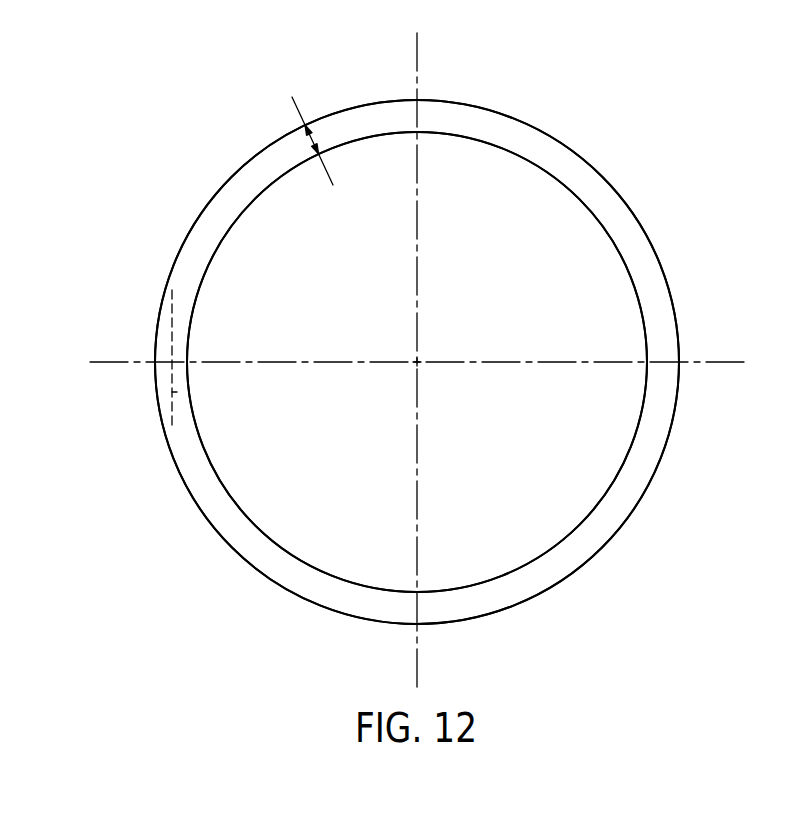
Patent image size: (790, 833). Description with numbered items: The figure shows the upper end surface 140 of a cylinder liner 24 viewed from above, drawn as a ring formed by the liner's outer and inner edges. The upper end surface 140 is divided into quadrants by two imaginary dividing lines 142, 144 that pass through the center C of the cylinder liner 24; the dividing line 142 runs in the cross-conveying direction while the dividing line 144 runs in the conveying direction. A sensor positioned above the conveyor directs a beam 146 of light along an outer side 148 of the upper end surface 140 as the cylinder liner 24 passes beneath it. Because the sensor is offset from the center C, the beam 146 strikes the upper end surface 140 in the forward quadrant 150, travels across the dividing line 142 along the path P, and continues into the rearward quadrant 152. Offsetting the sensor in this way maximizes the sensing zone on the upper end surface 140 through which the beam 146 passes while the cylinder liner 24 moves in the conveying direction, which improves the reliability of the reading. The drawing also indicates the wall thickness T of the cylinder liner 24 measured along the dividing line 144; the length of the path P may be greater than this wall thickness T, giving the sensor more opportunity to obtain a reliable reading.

The cylinder liner 24 is at (604, 181).
The upper end surface 140 is at (294, 580).
The dividing line 142 is at (718, 364).
The dividing line 144 is at (417, 67).
The beam 146 is at (172, 291).
The outer side 148 is at (126, 334).
The forward quadrant 150 is at (340, 278).
The rearward quadrant 152 is at (340, 493).
The wall thickness T is at (294, 99).
The path P is at (177, 392).
The center C is at (417, 363).